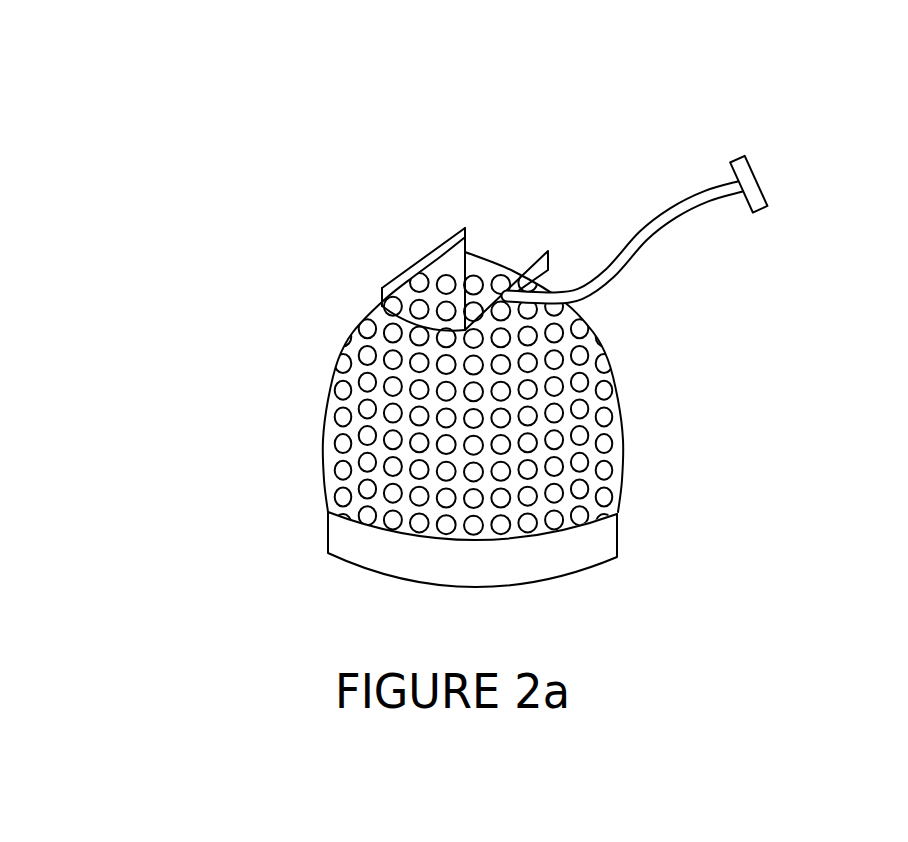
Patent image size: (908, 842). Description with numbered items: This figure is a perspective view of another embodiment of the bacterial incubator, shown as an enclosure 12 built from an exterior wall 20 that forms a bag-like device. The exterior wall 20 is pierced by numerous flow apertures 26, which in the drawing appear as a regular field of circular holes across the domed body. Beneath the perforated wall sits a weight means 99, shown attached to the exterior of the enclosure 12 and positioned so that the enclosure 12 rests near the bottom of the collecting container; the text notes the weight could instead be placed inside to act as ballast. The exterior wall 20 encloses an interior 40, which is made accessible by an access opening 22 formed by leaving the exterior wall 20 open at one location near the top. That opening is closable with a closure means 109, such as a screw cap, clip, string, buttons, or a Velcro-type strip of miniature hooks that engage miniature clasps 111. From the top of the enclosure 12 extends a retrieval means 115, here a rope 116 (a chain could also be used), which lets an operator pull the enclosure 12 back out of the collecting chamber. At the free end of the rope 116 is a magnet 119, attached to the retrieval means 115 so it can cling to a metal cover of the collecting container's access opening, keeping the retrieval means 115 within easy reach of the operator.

The enclosure 12 is at (598, 196).
The exterior wall 20 is at (541, 389).
The access opening 22 is at (383, 299).
The flow apertures 26 is at (612, 447).
The interior 40 is at (468, 283).
The weight means 99 is at (587, 550).
The closure means 109 is at (378, 231).
The miniature clasps 111 is at (440, 250).
The retrieval means 115 is at (664, 244).
The rope 116 is at (661, 230).
The magnet 119 is at (752, 173).